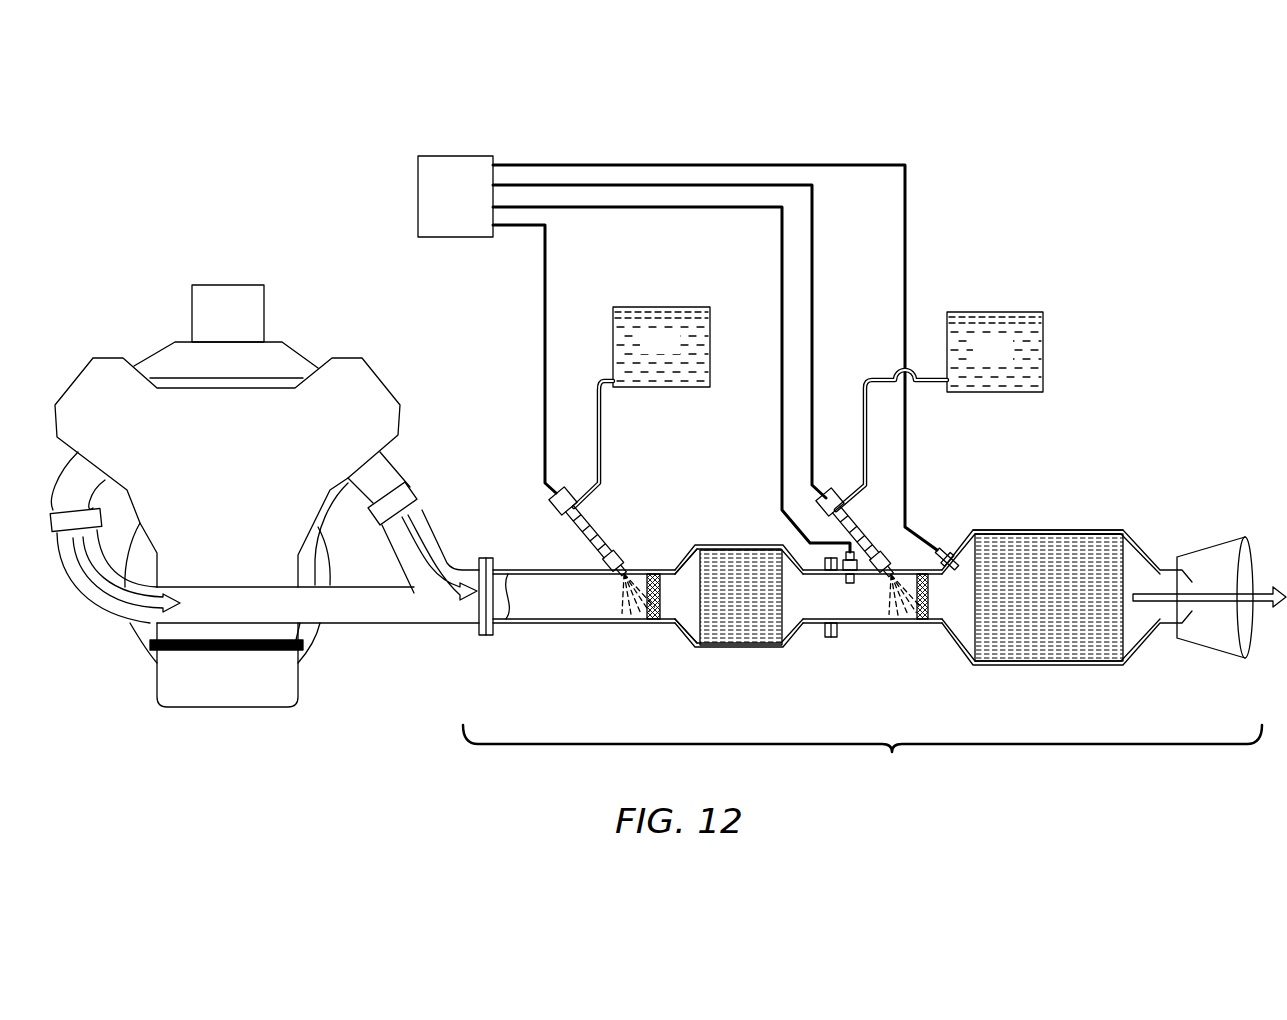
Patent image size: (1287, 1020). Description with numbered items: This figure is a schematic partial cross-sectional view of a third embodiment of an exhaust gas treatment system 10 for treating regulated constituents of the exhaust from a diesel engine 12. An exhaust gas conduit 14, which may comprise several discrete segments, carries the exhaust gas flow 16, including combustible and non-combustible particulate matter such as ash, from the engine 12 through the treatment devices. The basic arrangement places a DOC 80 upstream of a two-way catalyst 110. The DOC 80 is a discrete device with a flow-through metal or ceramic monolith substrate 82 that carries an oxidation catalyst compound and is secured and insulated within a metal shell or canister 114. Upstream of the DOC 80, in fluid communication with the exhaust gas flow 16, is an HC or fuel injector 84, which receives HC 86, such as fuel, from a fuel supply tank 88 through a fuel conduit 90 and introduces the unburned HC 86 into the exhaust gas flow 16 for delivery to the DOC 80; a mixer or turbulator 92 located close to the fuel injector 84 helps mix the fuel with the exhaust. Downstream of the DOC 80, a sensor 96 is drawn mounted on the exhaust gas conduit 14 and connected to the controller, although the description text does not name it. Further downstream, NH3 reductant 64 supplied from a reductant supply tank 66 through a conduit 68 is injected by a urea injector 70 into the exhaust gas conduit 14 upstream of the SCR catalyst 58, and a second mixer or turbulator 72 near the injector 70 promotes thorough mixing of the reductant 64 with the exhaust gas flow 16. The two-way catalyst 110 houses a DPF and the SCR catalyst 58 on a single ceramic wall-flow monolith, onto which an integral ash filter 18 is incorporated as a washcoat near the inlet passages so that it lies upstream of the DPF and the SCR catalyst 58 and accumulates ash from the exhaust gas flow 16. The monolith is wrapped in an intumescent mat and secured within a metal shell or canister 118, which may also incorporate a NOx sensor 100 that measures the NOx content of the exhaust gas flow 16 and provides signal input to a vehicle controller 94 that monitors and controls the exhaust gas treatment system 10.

The exhaust gas treatment system 10 is at (892, 760).
The diesel engine 12 is at (146, 343).
The exhaust gas conduit 14 is at (1163, 570).
The exhaust gas flow 16 is at (108, 608).
The ash filter 18 is at (1022, 550).
The SCR catalyst 58 is at (1087, 550).
The NH3 reductant 64 is at (982, 362).
The reductant supply tank 66 is at (995, 310).
The conduit 68 is at (860, 442).
The urea injector 70 is at (862, 535).
The mixer or turbulator 72 is at (922, 623).
The DOC 80 is at (703, 652).
The flow-through substrate 82 is at (710, 616).
The fuel injector 84 is at (600, 557).
The HC 86 is at (649, 355).
The fuel supply tank 88 is at (673, 305).
The fuel conduit 90 is at (600, 457).
The mixer or turbulator 92 is at (655, 570).
The vehicle controller 94 is at (444, 207).
The temperature sensor 96 is at (850, 583).
The NOx sensor 100 is at (907, 447).
The two-way catalyst 110 is at (1037, 668).
The metal shell or canister 114 is at (740, 647).
The metal shell or canister 118 is at (1045, 530).